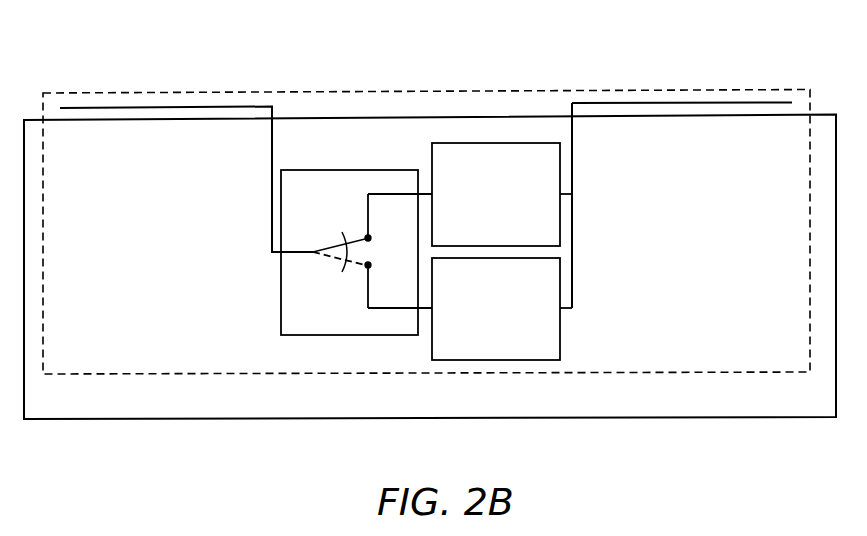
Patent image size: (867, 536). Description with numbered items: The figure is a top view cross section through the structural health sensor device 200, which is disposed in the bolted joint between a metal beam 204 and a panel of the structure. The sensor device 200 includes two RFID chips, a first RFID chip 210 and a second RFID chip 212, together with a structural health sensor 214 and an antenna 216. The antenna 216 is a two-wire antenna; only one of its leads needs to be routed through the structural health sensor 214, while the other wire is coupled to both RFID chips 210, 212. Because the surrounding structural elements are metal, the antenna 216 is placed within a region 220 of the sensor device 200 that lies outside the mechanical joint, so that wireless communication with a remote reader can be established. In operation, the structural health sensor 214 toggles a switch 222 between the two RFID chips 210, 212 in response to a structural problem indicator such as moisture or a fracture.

The structural health sensor device 200 is at (430, 246).
The metal beam 204 is at (157, 419).
The first RFID chip 210 is at (495, 142).
The second RFID chip 212 is at (493, 360).
The structural health sensor 214 is at (393, 336).
The antenna 216 is at (612, 103).
The region 220 is at (192, 97).
The toggle switch 222 is at (330, 272).